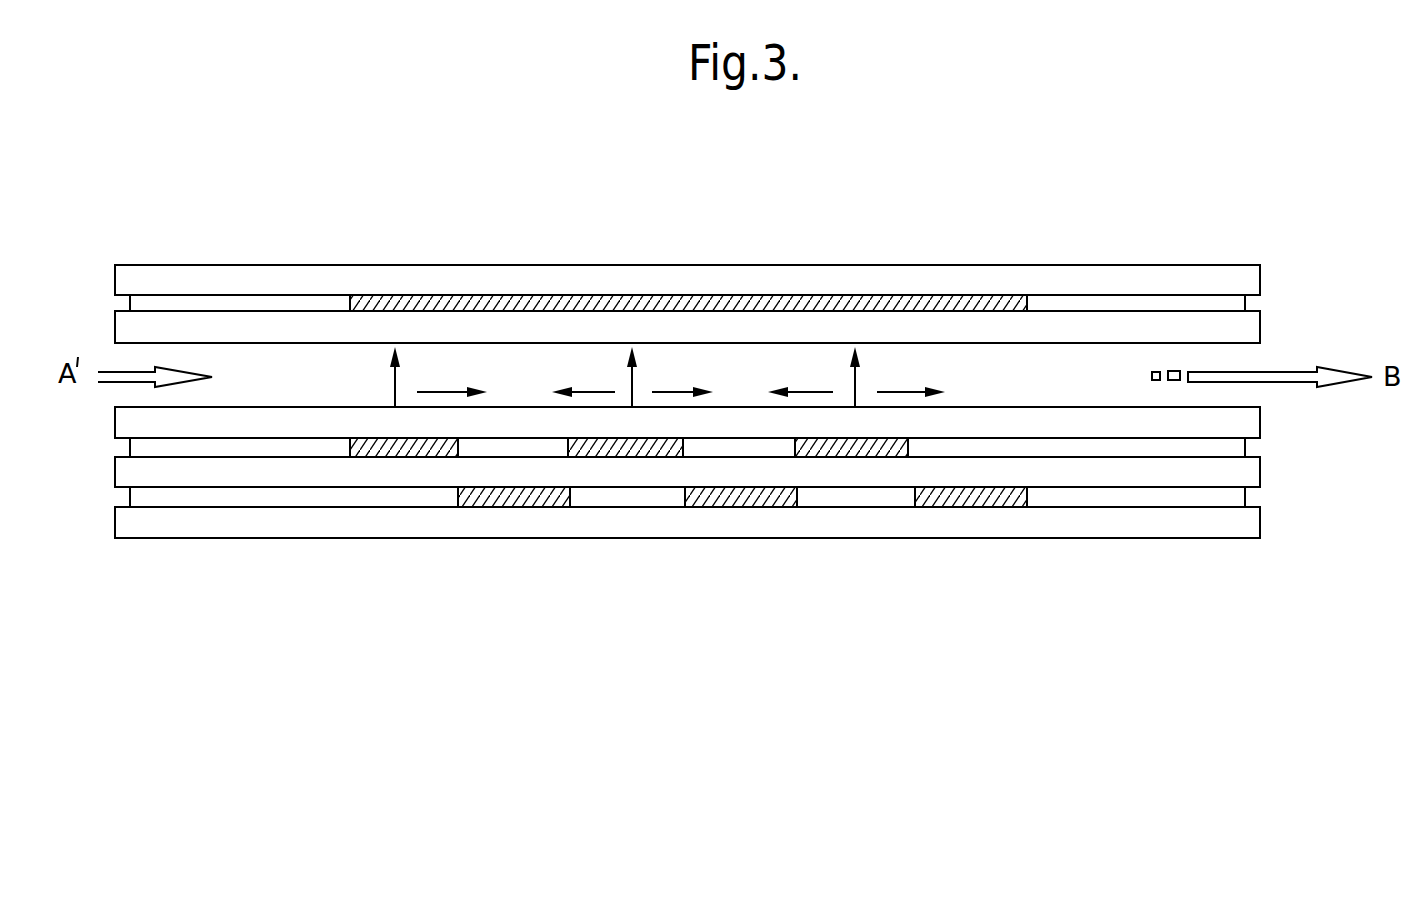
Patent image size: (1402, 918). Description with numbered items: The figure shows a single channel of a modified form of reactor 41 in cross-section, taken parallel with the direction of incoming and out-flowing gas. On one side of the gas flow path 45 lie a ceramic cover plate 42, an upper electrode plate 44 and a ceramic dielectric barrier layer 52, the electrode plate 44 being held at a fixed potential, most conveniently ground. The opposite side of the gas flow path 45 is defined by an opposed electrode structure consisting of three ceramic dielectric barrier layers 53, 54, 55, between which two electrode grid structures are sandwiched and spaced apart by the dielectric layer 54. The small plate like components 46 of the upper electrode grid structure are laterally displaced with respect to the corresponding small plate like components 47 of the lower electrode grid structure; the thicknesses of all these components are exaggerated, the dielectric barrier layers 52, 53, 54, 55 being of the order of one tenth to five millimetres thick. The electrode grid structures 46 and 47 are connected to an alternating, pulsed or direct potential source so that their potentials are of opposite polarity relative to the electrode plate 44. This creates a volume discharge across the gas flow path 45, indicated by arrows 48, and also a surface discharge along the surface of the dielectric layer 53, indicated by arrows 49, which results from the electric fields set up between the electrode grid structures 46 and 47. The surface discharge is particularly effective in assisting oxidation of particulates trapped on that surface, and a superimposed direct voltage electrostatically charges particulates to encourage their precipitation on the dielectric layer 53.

The reactor 41 is at (754, 240).
The ceramic cover plate 42 is at (630, 265).
The upper electrode plate 44 is at (847, 293).
The gas flow path 45 is at (1045, 375).
The small plate like components of the upper electrode grid structure 46 is at (632, 457).
The small plate like components of the lower electrode grid structure 47 is at (743, 507).
The arrows indicating volume discharge 48 is at (628, 347).
The arrows indicating surface discharge 49 is at (473, 395).
The ceramic dielectric barrier layer 52 is at (980, 323).
The ceramic dielectric barrier layer 53 is at (1248, 418).
The ceramic dielectric barrier layer 54 is at (1260, 468).
The ceramic dielectric barrier layer 55 is at (1260, 522).